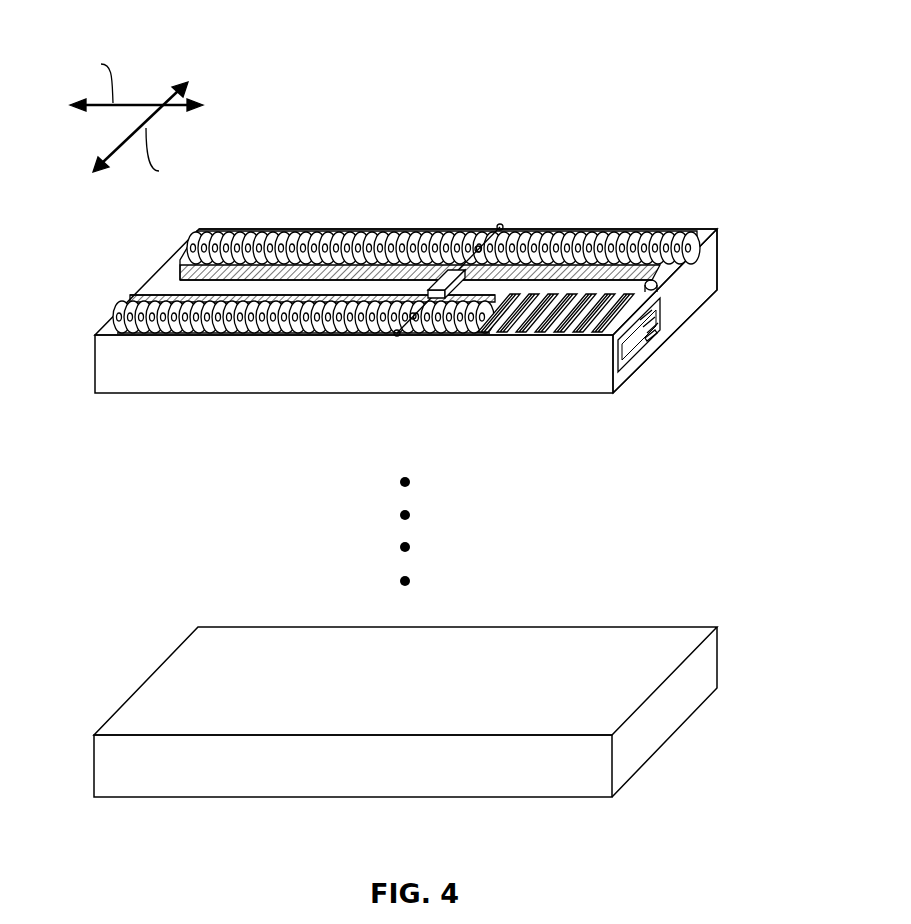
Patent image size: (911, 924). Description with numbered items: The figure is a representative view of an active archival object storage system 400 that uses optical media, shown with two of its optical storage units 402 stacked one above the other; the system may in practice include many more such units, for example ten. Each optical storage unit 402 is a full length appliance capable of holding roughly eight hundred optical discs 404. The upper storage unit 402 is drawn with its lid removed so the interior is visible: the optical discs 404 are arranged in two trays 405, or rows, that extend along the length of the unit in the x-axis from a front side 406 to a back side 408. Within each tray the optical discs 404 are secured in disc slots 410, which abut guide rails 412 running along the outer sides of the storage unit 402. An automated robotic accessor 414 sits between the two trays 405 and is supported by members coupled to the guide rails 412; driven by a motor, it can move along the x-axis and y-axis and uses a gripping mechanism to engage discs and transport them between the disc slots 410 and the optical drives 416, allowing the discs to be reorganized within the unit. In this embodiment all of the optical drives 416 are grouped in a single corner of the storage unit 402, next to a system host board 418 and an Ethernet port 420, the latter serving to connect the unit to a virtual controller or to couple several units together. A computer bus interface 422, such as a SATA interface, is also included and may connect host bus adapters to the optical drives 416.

The active archival object storage system 400 is at (423, 26).
The optical storage unit 402 is at (93, 367).
The optical disc 404 is at (672, 228).
The tray 405 is at (192, 252).
The front side 406 is at (678, 303).
The back side 408 is at (140, 293).
The disc slot 410 is at (176, 297).
The guide rail 412 is at (287, 297).
The automated robotic accessor 414 is at (447, 270).
The optical drive 416 is at (548, 330).
The system host board 418 is at (627, 352).
The Ethernet port 420 is at (655, 337).
The computer bus interface 422 is at (655, 283).